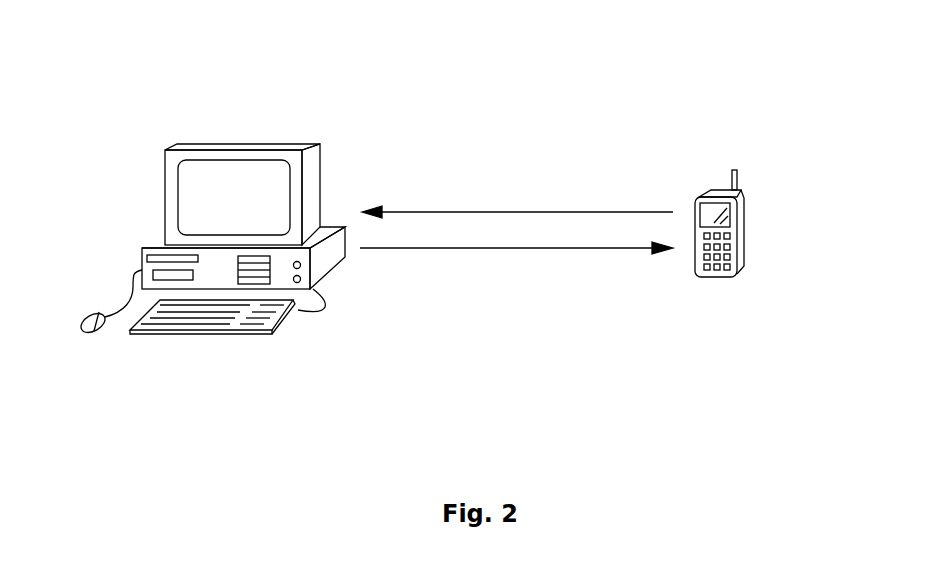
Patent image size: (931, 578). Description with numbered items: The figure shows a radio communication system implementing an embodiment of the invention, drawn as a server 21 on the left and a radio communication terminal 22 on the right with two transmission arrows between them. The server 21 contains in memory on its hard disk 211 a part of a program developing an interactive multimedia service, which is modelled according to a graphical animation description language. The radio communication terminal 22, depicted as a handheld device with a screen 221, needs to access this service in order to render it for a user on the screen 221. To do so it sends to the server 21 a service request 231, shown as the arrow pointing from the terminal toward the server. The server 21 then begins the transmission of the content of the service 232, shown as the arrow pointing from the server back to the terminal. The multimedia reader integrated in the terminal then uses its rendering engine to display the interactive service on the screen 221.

The server 21 is at (263, 213).
The hard disk 211 is at (330, 260).
The radio communication terminal 22 is at (685, 234).
The screen 221 is at (709, 206).
The service request 231 is at (467, 210).
The content of the service 232 is at (505, 249).